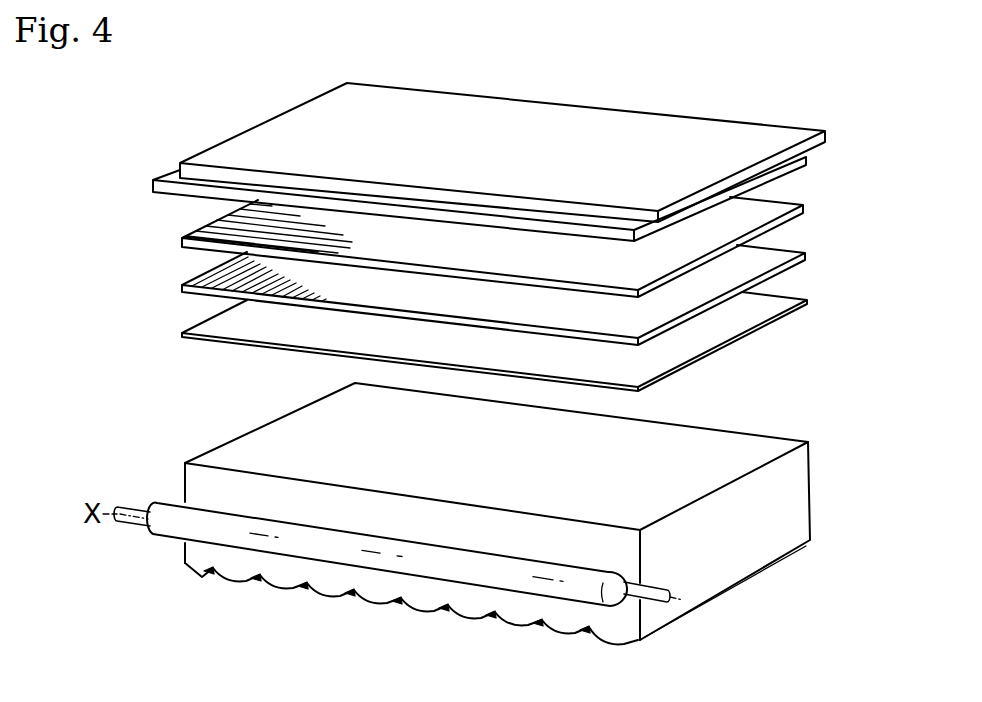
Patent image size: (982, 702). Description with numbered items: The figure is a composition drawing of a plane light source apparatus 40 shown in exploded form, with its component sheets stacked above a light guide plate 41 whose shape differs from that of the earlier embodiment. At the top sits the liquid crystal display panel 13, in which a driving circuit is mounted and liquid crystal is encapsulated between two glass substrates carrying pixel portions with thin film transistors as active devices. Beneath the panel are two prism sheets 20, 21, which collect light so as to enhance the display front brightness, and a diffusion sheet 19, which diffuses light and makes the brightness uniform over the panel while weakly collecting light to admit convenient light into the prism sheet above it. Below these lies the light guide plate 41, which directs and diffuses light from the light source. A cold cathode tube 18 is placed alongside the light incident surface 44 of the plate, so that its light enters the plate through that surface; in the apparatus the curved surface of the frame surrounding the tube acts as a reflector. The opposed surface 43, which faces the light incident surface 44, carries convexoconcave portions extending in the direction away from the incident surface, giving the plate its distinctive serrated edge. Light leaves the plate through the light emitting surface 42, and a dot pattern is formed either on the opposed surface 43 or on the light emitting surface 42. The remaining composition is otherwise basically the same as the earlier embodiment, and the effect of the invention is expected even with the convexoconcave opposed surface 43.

The liquid crystal display panel 13 is at (262, 142).
The cold cathode tube 18 is at (417, 570).
The diffusion sheet 19 is at (795, 300).
The prism sheet 20 is at (798, 199).
The prism sheet 21 is at (800, 253).
The backlight unit 40 is at (515, 227).
The light guide plate 41 is at (498, 516).
The light emitting surface 42 is at (310, 443).
The opposed surface 43 is at (325, 600).
The light incident surface 44 is at (218, 492).